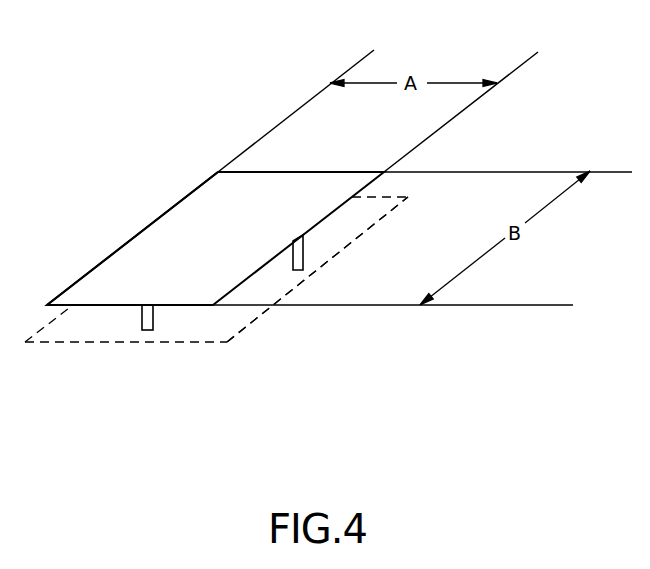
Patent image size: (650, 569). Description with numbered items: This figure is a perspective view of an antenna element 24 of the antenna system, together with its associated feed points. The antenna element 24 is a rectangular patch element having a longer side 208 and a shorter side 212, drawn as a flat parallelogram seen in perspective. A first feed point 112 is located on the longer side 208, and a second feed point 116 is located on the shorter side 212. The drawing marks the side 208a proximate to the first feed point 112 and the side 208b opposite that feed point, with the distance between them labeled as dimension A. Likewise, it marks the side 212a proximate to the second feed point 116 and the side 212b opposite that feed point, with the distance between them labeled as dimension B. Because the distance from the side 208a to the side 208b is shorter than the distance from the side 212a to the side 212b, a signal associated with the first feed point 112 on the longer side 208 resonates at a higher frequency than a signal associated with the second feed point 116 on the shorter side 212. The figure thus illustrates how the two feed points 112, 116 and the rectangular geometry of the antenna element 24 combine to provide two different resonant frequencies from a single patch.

The antenna element 24 is at (165, 213).
The shorter side 212 is at (288, 170).
The side proximate to the second feed point 212a is at (77, 306).
The side opposite the second feed point 212b is at (343, 171).
The longer side 208 is at (338, 208).
The side proximate to the first feed point 208a is at (373, 178).
The side opposite the first feed point 208b is at (110, 252).
The first feed point 112 is at (305, 260).
The second feed point 116 is at (140, 320).